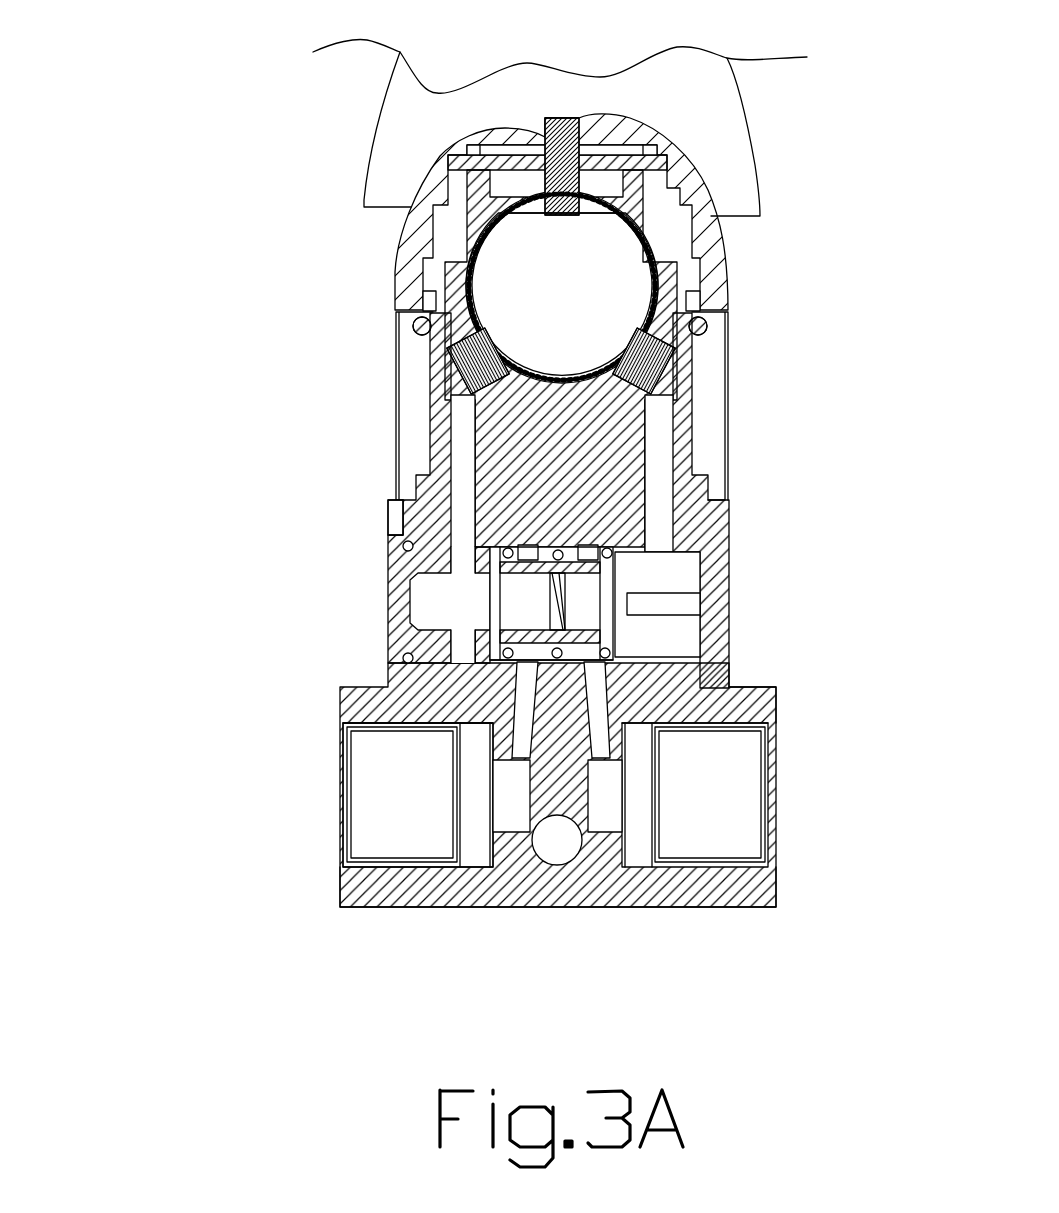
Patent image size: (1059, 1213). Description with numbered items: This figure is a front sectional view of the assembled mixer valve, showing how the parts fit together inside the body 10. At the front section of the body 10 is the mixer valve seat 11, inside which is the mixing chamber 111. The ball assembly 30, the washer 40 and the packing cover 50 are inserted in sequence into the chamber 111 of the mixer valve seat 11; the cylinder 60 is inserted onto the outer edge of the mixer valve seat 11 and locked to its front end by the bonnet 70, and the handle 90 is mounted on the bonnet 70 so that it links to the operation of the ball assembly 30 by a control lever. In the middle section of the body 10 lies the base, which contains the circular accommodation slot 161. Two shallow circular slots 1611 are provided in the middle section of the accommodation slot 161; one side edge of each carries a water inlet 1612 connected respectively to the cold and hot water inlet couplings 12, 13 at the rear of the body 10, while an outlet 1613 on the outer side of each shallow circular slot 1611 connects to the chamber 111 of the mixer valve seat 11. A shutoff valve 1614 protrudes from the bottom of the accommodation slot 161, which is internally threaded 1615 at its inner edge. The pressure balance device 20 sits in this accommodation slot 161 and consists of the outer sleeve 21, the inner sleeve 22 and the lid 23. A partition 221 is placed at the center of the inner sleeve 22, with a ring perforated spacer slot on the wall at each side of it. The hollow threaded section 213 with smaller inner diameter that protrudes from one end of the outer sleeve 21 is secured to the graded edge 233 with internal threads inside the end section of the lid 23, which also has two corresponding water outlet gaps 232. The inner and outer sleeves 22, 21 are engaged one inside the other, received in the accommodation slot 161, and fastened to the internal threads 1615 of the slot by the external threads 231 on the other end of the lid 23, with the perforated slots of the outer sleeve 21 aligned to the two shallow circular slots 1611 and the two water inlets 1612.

The handle 90 is at (706, 78).
The bonnet 70 is at (730, 247).
The cylinder 60 is at (397, 356).
The packing cover 50 is at (440, 183).
The washer 40 is at (455, 215).
The ball assembly 30 is at (675, 195).
The mixing chamber 111 is at (663, 297).
The mixer valve seat 11 is at (443, 303).
The pressure balance device 20 is at (388, 577).
The outer sleeve 21 is at (613, 560).
The inner sleeve 22 is at (680, 650).
The lid 23 is at (393, 614).
The partition 221 is at (547, 600).
The water outlet gaps 232 is at (403, 547).
The graded edge 233 is at (388, 503).
The hollow threaded section 213 is at (395, 517).
The external threads 231 is at (343, 724).
The internal threads 1615 is at (418, 795).
The body 10 is at (340, 766).
The cold water inlet coupling 12 is at (762, 715).
The hot water inlet coupling 13 is at (340, 878).
The accommodation slot 161 is at (700, 655).
The shallow circular slots 1611 is at (527, 547).
The water inlet 1612 is at (524, 718).
The outlet 1613 is at (456, 510).
The shutoff valve 1614 is at (683, 607).